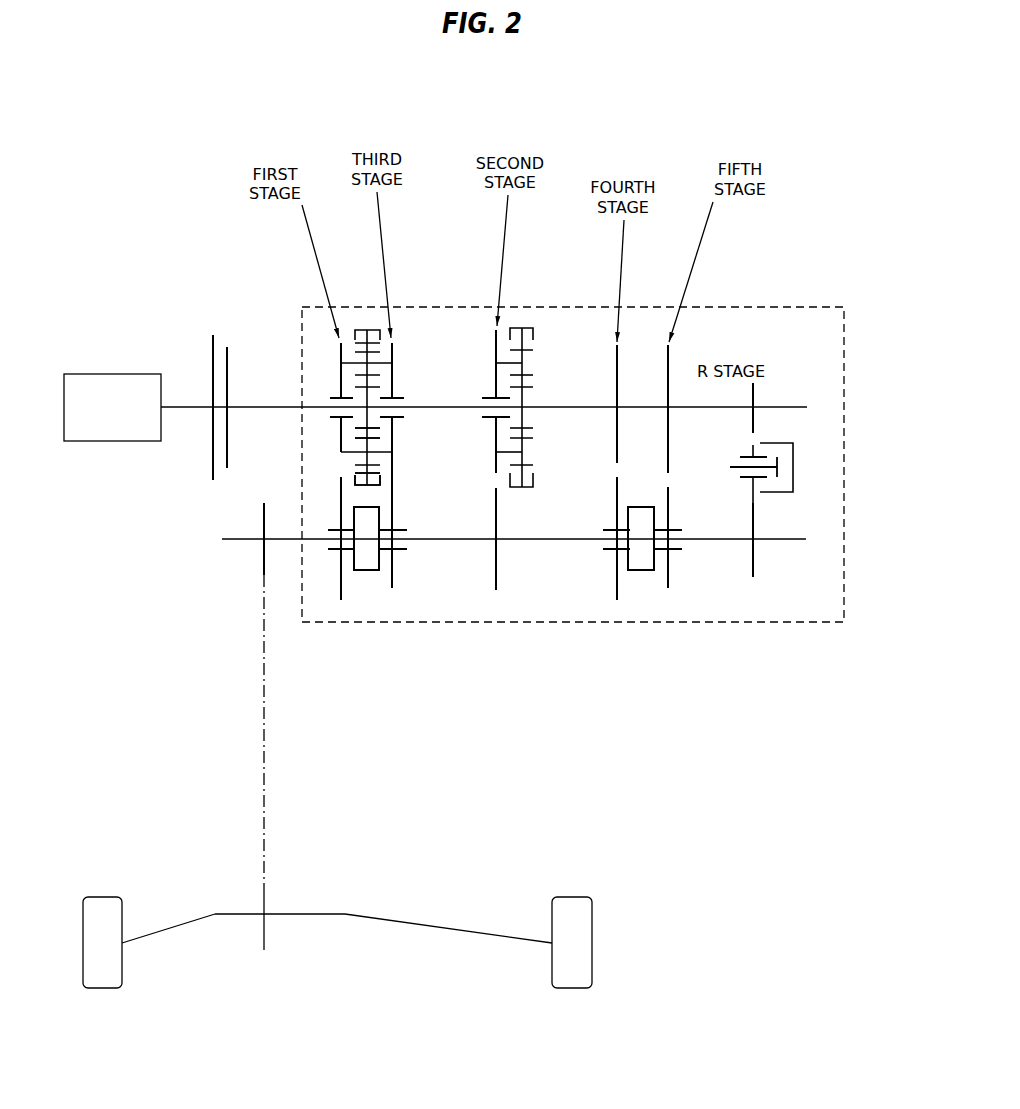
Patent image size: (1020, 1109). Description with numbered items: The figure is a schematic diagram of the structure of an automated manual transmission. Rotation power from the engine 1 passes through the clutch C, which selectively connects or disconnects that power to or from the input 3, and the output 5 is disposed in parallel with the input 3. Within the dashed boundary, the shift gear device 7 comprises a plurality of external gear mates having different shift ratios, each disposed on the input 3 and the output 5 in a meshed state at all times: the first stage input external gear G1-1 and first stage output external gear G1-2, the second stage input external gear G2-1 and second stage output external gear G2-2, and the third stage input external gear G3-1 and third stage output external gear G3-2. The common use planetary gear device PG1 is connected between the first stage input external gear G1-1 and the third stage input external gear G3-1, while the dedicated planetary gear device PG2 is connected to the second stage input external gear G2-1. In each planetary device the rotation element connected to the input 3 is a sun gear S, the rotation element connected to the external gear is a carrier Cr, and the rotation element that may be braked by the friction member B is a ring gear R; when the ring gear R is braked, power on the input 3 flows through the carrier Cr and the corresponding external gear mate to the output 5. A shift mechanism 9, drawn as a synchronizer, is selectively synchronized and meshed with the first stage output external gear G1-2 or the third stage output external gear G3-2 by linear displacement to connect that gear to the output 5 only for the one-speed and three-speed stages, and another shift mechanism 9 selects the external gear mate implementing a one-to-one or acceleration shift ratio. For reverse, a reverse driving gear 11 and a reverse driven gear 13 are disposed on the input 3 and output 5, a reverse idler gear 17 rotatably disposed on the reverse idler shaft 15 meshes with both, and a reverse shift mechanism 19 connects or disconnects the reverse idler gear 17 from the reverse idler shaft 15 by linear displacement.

The engine 1 is at (103, 372).
The input 3 is at (787, 406).
The output 5 is at (790, 540).
The shift gear device 7 is at (808, 306).
The shift mechanism 9 is at (367, 570).
The reverse driving gear 11 is at (757, 388).
The reverse driven gear 13 is at (757, 560).
The reverse idler shaft 15 is at (777, 462).
The reverse idler gear 17 is at (763, 493).
The reverse shift mechanism 19 is at (793, 470).
The clutch C is at (217, 328).
The first stage input external gear G1-1 is at (333, 377).
The first stage output external gear G1-2 is at (340, 582).
The second stage input external gear G2-1 is at (494, 377).
The second stage output external gear G2-2 is at (498, 570).
The third stage input external gear G3-1 is at (400, 377).
The third stage output external gear G3-2 is at (395, 568).
The common use planetary gear device PG1 is at (365, 318).
The dedicated planetary gear device PG2 is at (522, 318).
The sun gear S is at (355, 428).
The carrier Cr is at (355, 445).
The ring gear R is at (380, 473).
The friction member B is at (380, 483).